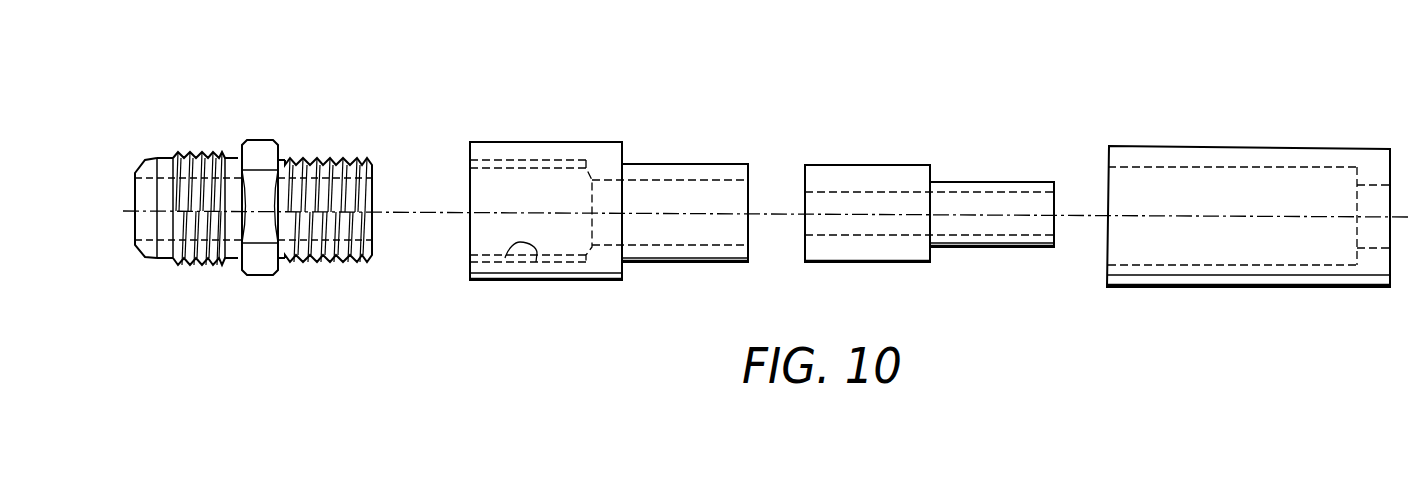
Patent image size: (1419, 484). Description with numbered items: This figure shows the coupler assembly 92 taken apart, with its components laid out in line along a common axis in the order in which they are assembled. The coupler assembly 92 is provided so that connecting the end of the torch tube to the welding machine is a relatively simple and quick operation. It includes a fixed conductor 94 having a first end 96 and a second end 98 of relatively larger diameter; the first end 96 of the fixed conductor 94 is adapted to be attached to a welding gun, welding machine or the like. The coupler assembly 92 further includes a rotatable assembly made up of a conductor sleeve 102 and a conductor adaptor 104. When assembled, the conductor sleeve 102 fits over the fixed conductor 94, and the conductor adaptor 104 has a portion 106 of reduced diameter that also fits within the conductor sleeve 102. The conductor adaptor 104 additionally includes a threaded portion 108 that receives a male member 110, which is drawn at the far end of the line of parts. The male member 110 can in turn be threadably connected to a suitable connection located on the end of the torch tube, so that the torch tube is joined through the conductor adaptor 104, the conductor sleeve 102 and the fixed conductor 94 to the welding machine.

The coupler assembly 92 is at (1008, 96).
The fixed conductor 94 is at (934, 207).
The first end 96 is at (1053, 181).
The second end 98 is at (806, 165).
The conductor sleeve 102 is at (1327, 147).
The conductor adaptor 104 is at (556, 142).
The portion of reduced diameter 106 is at (683, 164).
The threaded portion 108 is at (536, 262).
The male member 110 is at (312, 160).